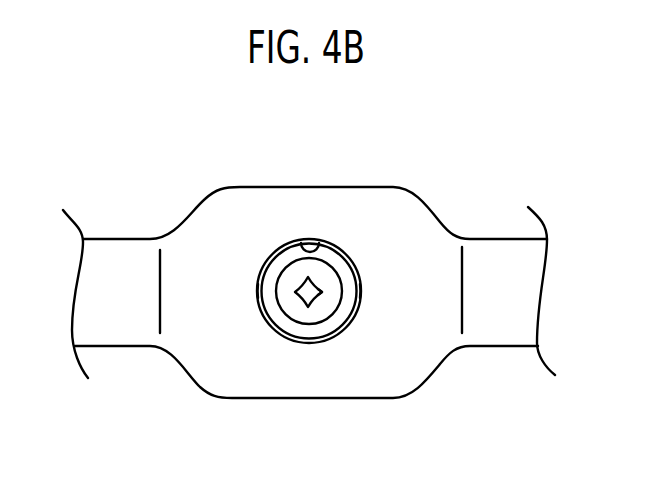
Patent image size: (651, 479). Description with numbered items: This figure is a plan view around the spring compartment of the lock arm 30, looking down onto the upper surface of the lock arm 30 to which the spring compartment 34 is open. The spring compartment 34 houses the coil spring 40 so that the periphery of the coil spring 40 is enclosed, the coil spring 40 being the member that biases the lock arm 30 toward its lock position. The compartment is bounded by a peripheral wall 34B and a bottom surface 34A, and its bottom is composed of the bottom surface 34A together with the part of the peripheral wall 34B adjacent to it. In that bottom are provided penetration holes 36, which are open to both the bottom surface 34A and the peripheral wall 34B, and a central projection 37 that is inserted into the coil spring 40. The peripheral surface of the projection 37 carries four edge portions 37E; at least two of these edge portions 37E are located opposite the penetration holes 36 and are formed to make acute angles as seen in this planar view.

The lock arm 30 is at (488, 262).
The spring compartment 34 is at (308, 291).
The bottom surface 34A is at (324, 282).
The peripheral wall 34B is at (302, 239).
The penetration holes 36 is at (258, 294).
The projection 37 is at (315, 296).
The edge portions 37E is at (320, 293).
The coil spring 40 is at (278, 318).